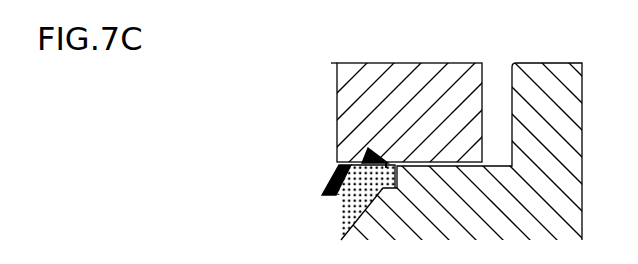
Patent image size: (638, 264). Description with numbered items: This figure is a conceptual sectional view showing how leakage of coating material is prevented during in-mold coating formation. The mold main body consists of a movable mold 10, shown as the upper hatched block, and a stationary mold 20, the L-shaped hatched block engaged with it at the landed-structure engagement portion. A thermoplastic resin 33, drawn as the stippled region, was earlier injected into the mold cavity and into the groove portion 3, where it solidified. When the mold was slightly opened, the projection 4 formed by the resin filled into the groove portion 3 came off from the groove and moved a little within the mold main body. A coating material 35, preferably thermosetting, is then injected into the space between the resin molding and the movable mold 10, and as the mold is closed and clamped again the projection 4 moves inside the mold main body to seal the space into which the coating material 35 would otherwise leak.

The movable mold 10 is at (373, 67).
The stationary mold 20 is at (558, 63).
The projection 4 is at (389, 166).
The groove portion 3 is at (364, 157).
The coating material 35 is at (324, 185).
The thermoplastic resin 33 is at (343, 211).